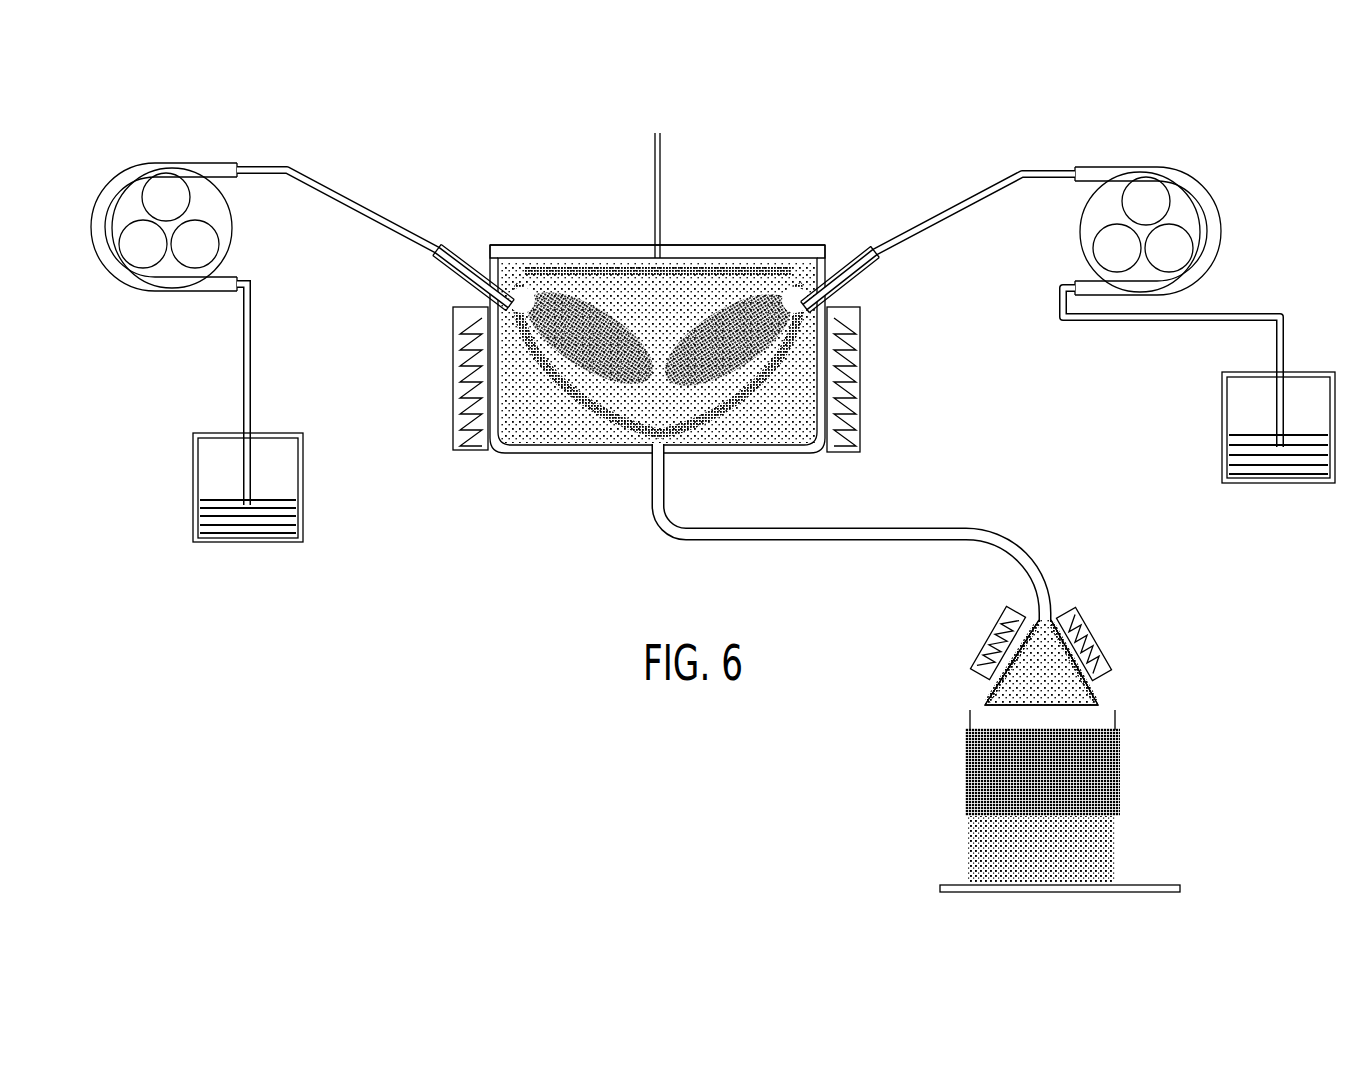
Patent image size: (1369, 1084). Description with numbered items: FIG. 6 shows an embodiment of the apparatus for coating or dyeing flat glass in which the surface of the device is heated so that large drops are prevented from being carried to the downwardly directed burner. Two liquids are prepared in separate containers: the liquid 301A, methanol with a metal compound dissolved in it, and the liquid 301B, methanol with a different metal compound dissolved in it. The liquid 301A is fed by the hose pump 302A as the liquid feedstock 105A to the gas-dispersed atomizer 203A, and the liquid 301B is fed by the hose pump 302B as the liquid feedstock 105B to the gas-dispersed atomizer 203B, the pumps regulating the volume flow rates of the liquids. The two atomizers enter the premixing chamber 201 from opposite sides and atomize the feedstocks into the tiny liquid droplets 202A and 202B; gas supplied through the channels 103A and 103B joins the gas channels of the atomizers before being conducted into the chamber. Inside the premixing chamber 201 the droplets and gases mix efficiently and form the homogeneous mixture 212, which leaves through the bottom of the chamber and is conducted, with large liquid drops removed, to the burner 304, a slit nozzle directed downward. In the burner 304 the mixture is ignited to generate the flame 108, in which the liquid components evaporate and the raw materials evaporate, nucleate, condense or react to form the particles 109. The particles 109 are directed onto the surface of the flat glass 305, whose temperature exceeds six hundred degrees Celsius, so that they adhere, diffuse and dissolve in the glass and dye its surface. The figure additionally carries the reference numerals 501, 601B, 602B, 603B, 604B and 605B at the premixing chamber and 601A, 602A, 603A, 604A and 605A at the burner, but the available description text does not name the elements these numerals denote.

The hose pump 302A is at (113, 174).
The hose pump 302B is at (1213, 178).
The liquid feedstock 105A is at (363, 216).
The liquid feedstock 105B is at (957, 218).
The first inlet nozzle 103A is at (435, 238).
The second inlet nozzle 103B is at (862, 270).
The gas-dispersed atomizer 203A is at (435, 278).
The gas-dispersed atomizer 203B is at (857, 283).
The premixing chamber 201 is at (755, 247).
The vent tube 501 is at (657, 133).
The liquid droplets 202A is at (580, 317).
The liquid droplets 202B is at (727, 315).
The vessel heater 602B is at (853, 435).
The vessel inner wall 601B is at (762, 450).
The vessel stipple layer 603B is at (697, 441).
The vessel contents 604B is at (578, 441).
The vessel outer wall 605B is at (500, 452).
The homogeneous mixture 212 is at (641, 443).
The burner 304 is at (1100, 705).
The spray nozzle outlet 601A is at (983, 697).
The spray nozzle heater 602A is at (1087, 620).
The spray nozzle heater 603A is at (980, 653).
The spray nozzle wall 604A is at (985, 693).
The spray nozzle wall 605A is at (1105, 658).
The flame 108 is at (1120, 780).
The particles 109 is at (1113, 865).
The flat glass 305 is at (1178, 885).
The liquid 301A is at (290, 520).
The liquid 301B is at (1318, 465).